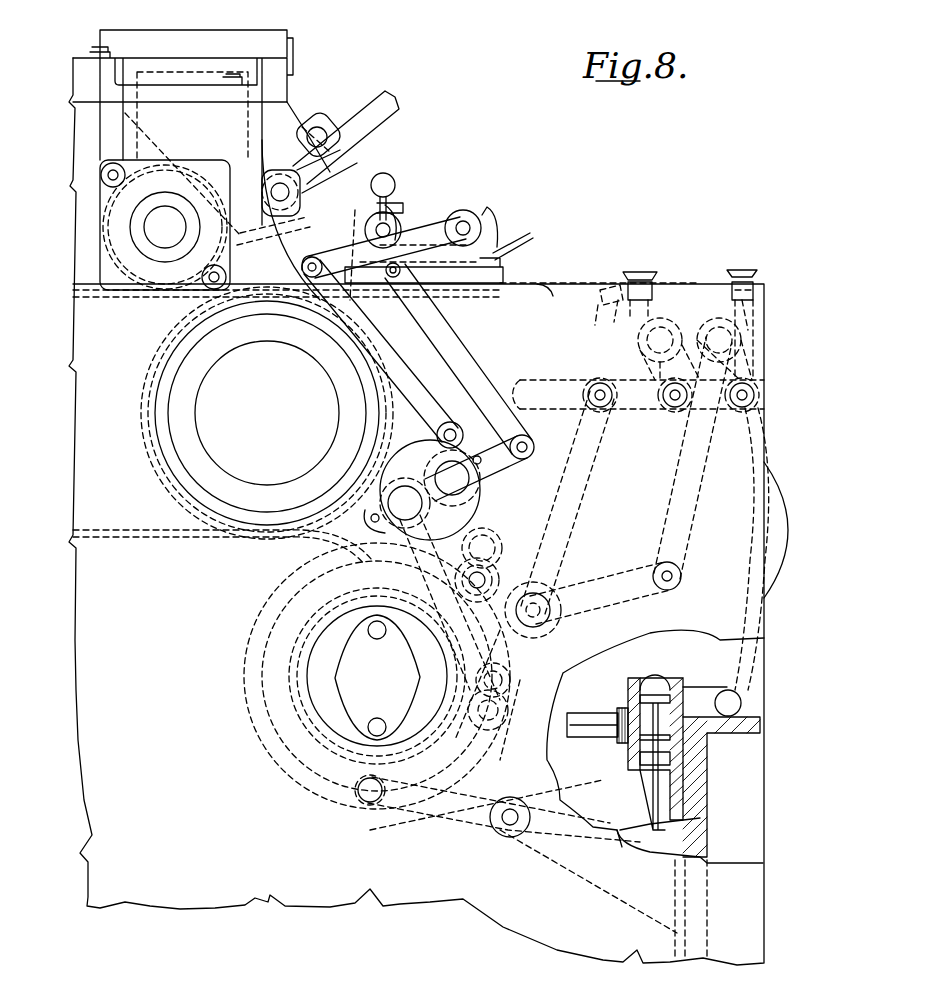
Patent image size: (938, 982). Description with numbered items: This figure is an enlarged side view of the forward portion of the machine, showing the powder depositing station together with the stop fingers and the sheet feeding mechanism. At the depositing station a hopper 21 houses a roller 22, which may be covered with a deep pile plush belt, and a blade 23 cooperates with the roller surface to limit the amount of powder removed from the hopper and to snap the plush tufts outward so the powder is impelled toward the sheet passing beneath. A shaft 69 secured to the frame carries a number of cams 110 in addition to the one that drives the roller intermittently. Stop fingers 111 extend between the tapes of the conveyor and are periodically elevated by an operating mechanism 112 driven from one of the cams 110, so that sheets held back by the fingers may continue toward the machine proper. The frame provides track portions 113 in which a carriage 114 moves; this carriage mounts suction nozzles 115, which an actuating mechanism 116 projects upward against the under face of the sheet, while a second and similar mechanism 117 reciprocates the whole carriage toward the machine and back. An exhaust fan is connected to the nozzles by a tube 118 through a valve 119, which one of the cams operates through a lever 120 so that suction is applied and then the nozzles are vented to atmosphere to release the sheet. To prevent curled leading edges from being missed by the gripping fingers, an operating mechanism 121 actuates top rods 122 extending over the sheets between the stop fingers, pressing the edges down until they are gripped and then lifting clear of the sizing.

The hopper 21 is at (165, 144).
The roller 22 is at (237, 163).
The blade 23 is at (250, 240).
The shaft 69 is at (377, 677).
The cams 110 is at (412, 568).
The stop fingers 111 is at (348, 262).
The operating mechanism 112 is at (410, 388).
The track portions 113 is at (560, 385).
The carriage 114 is at (684, 405).
The suction nozzles 115 is at (756, 277).
The actuating mechanism 116 is at (700, 500).
The second actuating mechanism 117 is at (575, 532).
The tube 118 is at (590, 716).
The valve 119 is at (670, 680).
The lever 120 is at (640, 772).
The operating mechanism 121 is at (450, 333).
The top rods 122 is at (283, 273).